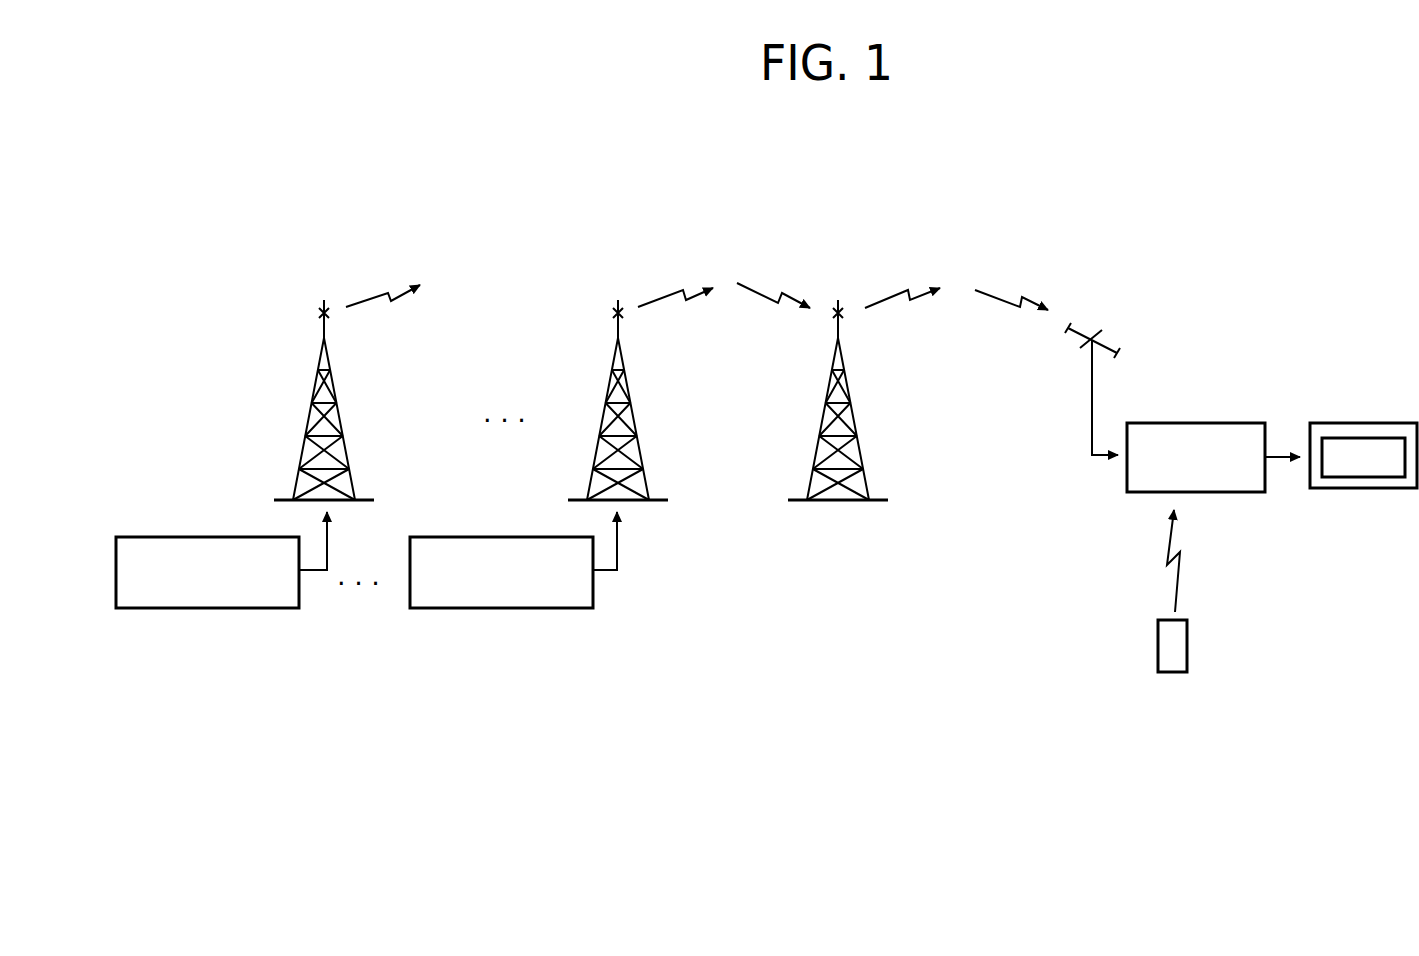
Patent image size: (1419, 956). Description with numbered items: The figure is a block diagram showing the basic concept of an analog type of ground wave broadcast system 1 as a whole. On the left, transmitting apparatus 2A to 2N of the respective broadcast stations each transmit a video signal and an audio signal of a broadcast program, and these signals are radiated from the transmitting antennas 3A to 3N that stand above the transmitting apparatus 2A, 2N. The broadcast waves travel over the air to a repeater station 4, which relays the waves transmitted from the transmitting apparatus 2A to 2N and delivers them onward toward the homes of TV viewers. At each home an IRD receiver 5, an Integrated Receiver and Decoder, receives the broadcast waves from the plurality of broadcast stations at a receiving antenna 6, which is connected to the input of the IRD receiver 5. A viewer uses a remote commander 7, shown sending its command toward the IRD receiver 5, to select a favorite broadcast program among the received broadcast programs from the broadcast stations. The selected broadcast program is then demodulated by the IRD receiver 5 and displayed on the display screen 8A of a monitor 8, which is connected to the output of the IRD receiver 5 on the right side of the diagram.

The ground wave broadcast system 1 is at (1040, 208).
The transmitting apparatus 2A is at (242, 608).
The transmitting apparatus 2N is at (538, 608).
The transmitting antenna 3A is at (344, 413).
The transmitting antenna 3N is at (638, 413).
The repeater station 4 is at (858, 420).
The IRD receiver 5 is at (1192, 423).
The receiving antenna 6 is at (1142, 316).
The remote commander 7 is at (1187, 645).
The monitor 8 is at (1384, 423).
The display screen 8A is at (1374, 478).